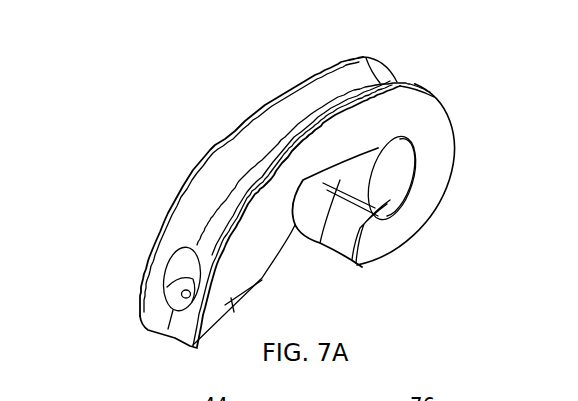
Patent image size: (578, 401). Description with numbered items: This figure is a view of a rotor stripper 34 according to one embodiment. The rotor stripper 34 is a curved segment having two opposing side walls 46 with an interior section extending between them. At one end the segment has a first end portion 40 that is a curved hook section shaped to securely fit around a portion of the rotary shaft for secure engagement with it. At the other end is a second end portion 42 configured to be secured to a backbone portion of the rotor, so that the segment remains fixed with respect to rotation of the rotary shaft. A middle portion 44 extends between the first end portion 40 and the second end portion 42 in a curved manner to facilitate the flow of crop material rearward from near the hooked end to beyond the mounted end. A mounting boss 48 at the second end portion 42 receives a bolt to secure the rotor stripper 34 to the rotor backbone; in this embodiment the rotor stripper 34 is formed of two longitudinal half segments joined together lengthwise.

The rotor stripper 34 is at (150, 100).
The first end portion 40 is at (413, 234).
The second end portion 42 is at (140, 285).
The middle portion 44 is at (273, 123).
The side walls 46 is at (267, 224).
The mounting boss 48 is at (174, 267).